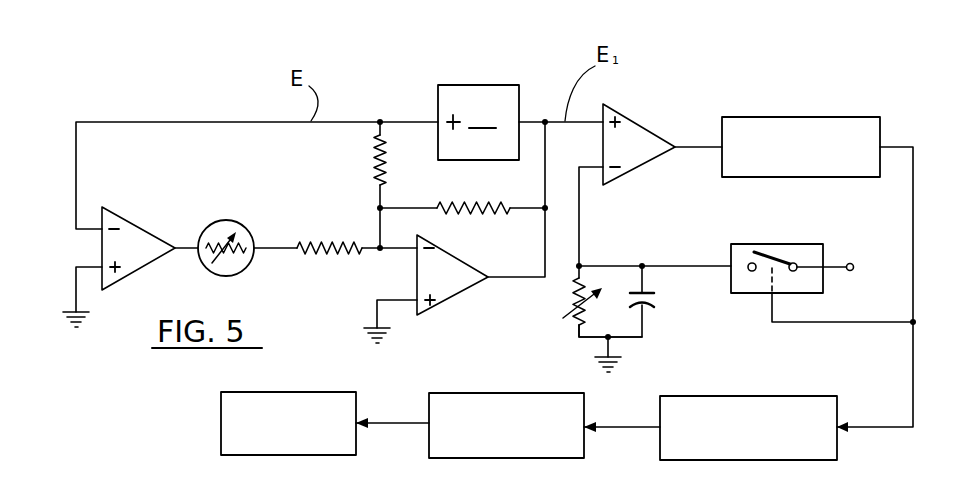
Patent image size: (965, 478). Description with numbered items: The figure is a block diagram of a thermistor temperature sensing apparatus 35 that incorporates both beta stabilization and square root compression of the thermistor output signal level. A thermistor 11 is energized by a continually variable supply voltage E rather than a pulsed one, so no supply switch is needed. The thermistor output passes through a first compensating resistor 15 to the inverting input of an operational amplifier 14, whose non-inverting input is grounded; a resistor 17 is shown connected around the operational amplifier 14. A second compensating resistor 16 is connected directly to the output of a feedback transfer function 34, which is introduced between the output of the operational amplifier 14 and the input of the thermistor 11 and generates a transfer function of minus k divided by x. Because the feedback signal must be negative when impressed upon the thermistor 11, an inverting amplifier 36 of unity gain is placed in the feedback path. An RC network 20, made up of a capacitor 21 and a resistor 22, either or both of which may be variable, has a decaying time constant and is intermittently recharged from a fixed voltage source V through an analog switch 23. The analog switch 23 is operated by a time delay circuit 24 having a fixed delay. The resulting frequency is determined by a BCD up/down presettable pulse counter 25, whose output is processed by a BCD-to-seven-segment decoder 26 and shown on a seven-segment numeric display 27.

The thermistor 11 is at (228, 222).
The operational amplifier 14 is at (460, 262).
The first compensating resistor 15 is at (321, 243).
The second compensating resistor 16 is at (375, 157).
The feedback resistor 17 is at (478, 206).
The RC network 20 is at (568, 330).
The capacitor 21 is at (657, 295).
The resistor 22 is at (577, 290).
The analog switch 23 is at (805, 244).
The time delay circuit 24 is at (792, 178).
The BCD up/down presettable pulse counter 25 is at (732, 396).
The BCD-to-7 segment decoder 26 is at (446, 393).
The 7-segment numeric display 27 is at (358, 400).
The feedback transfer function 34 is at (496, 85).
The apparatus 35 is at (680, 87).
The inverting amplifier 36 is at (136, 226).